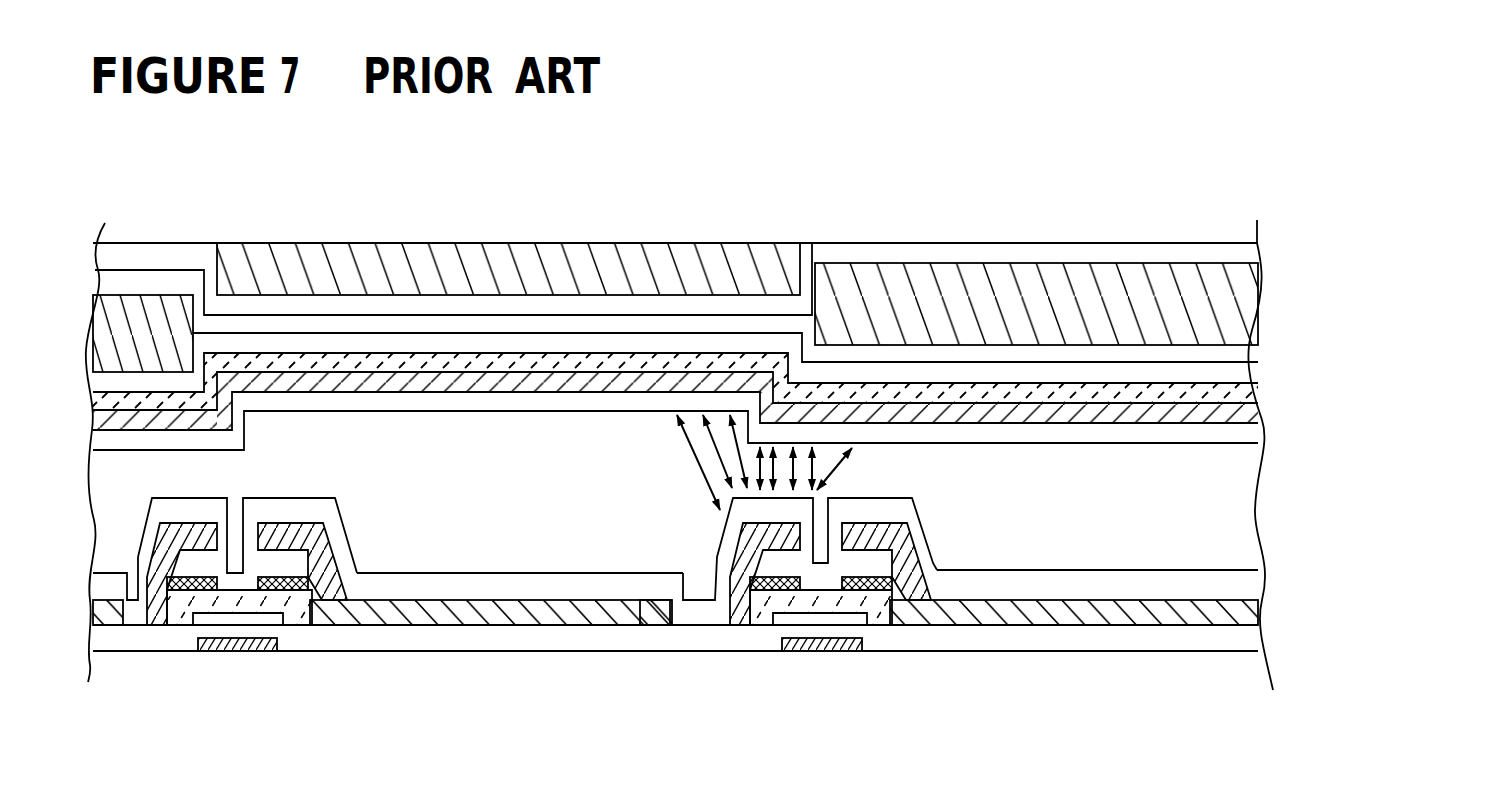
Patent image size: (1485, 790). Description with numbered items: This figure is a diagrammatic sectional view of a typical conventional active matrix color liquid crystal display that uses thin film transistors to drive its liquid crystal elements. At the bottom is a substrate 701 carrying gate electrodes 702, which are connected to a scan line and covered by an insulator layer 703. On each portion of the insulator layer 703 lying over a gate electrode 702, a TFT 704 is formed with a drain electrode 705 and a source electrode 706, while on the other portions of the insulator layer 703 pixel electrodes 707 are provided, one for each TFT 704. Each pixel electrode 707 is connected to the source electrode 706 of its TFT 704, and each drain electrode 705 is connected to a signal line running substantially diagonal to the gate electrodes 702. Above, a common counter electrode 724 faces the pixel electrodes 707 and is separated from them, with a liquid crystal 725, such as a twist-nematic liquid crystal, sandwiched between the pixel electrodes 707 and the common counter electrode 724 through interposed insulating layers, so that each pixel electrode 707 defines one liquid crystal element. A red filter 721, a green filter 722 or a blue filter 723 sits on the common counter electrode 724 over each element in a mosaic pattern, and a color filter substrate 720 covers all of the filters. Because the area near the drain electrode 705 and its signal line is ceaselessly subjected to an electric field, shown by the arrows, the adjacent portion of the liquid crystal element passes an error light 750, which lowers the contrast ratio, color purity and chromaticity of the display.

The substrate 701 is at (307, 726).
The gate electrode 702 is at (822, 652).
The insulator layer 703 is at (888, 638).
The TFT 704 is at (366, 582).
The drain electrode 705 is at (190, 535).
The source electrode 706 is at (327, 558).
The pixel electrode 707 is at (397, 610).
The color filter substrate 720 is at (643, 158).
The red filter 721 is at (345, 262).
The green filter 722 is at (962, 297).
The blue filter 723 is at (130, 300).
The common counter electrode 724 is at (1207, 416).
The liquid crystal 725 is at (1023, 477).
The error light 750 is at (737, 239).